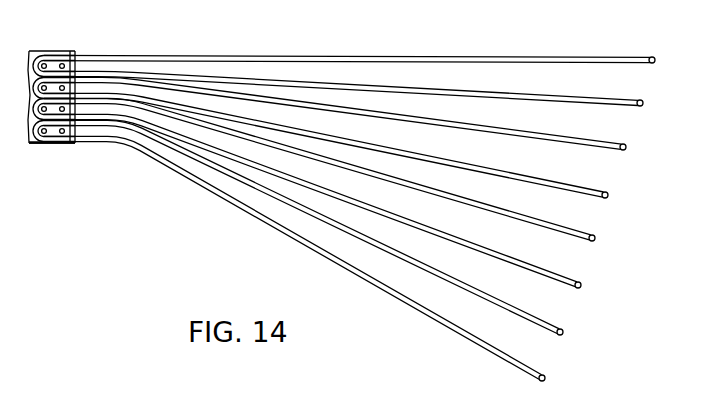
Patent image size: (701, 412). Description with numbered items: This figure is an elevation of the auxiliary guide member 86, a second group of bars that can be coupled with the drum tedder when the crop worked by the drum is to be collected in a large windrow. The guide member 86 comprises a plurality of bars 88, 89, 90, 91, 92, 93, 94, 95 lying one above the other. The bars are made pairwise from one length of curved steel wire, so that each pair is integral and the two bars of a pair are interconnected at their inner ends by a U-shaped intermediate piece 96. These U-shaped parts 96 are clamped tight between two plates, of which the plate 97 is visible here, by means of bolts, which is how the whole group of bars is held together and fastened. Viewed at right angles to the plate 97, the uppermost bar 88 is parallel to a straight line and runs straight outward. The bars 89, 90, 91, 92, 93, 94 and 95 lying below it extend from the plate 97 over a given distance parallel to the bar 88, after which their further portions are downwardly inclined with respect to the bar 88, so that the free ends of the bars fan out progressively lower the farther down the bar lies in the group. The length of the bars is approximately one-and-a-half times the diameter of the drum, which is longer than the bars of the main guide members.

The auxiliary guide member 86 is at (322, 50).
The bar 88 is at (648, 63).
The bar 89 is at (637, 105).
The bar 90 is at (620, 149).
The bar 91 is at (603, 197).
The bar 92 is at (590, 240).
The bar 93 is at (576, 287).
The bar 94 is at (558, 334).
The bar 95 is at (542, 381).
The U-shaped intermediate piece 96 is at (56, 34).
The plate 97 is at (71, 51).